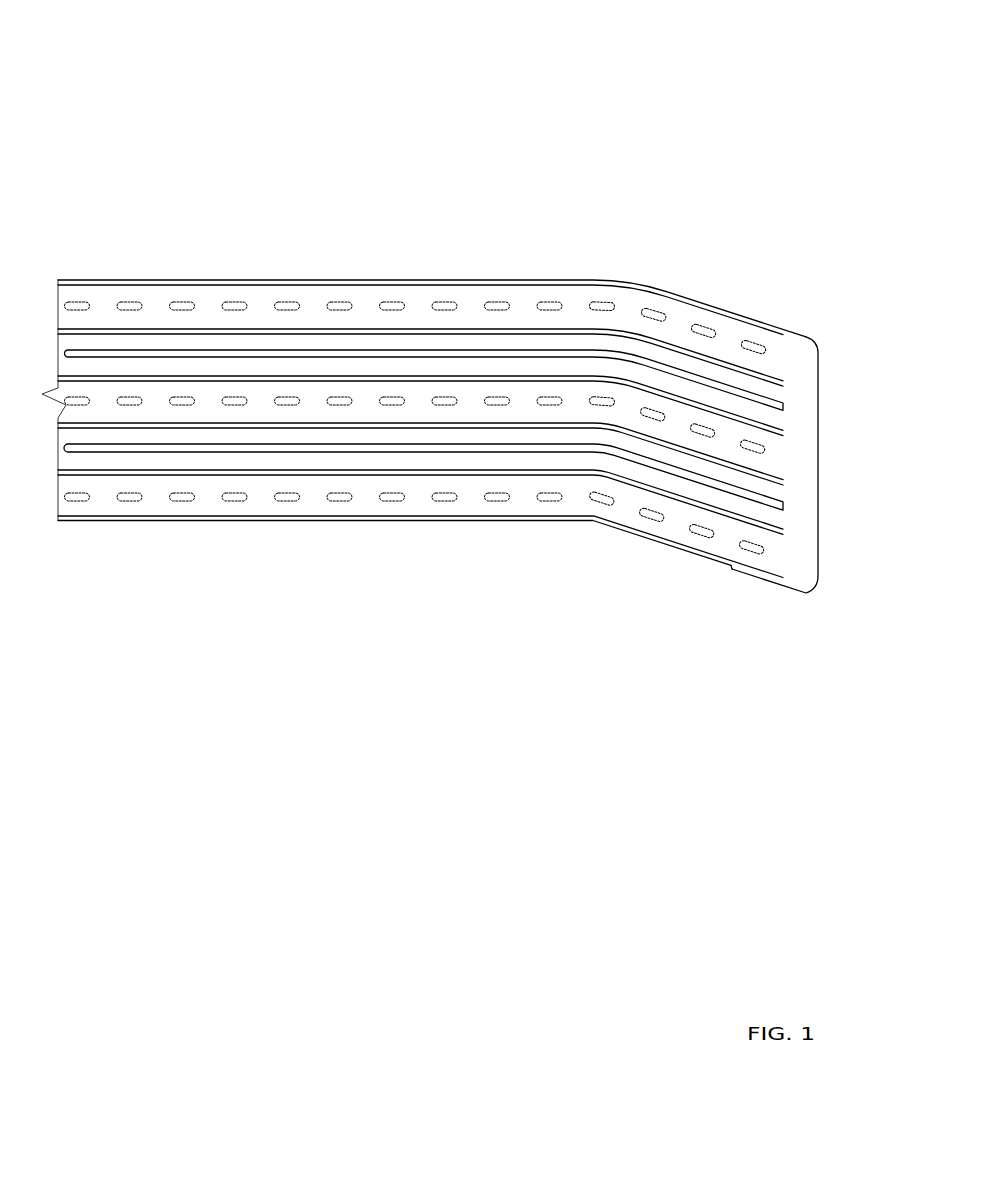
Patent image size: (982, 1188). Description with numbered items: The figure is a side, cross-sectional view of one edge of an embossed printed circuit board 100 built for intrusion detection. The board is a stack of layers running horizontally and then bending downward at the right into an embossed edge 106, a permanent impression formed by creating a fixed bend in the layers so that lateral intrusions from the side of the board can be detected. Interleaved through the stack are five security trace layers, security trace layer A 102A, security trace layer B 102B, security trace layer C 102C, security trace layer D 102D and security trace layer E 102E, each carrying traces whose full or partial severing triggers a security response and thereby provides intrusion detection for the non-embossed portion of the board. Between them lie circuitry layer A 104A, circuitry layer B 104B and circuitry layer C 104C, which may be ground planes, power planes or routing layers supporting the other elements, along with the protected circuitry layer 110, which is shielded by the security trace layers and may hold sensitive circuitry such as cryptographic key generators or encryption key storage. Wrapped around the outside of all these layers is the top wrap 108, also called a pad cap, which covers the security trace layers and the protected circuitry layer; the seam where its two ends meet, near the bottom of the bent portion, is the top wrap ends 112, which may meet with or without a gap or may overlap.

The embossed printed circuit board 100 is at (413, 70).
The security trace layer A 102A is at (230, 303).
The security trace layer B 102B is at (515, 355).
The security trace layer C 102C is at (397, 401).
The security trace layer D 102D is at (343, 447).
The security trace layer E 102E is at (287, 495).
The circuitry layer A 104A is at (350, 330).
The circuitry layer B 104B is at (685, 400).
The circuitry layer C 104C is at (370, 423).
The embossed edge 106 is at (730, 283).
The top wrap 108 is at (220, 520).
The protected circuitry layer 110 is at (335, 470).
The top wrap ends 112 is at (733, 563).